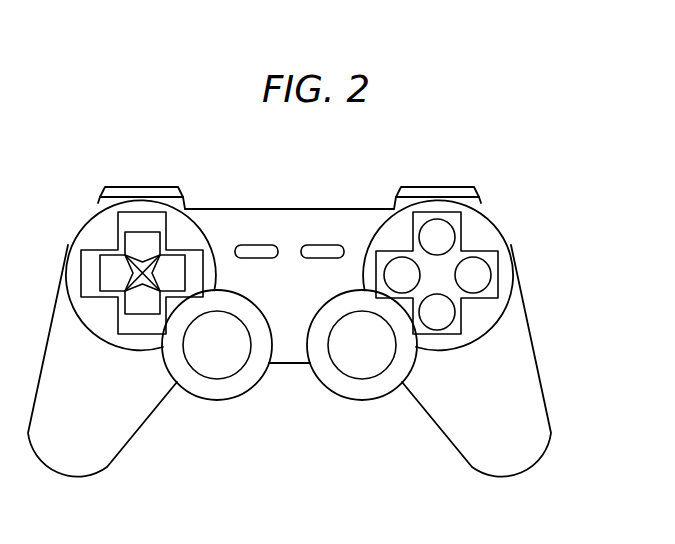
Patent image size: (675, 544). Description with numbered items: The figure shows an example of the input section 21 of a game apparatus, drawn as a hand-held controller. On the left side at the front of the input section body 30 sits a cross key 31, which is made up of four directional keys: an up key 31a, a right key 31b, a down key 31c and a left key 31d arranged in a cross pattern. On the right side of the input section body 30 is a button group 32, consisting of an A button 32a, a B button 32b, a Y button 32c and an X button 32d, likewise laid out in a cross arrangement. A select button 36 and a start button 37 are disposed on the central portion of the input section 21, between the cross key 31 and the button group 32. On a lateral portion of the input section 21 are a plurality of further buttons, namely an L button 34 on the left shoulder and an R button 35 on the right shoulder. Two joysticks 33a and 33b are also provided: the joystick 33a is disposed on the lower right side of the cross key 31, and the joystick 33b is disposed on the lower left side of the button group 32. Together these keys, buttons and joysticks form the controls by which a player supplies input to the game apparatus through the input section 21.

The input section 21 is at (553, 325).
The input section body 30 is at (271, 208).
The cross key 31 is at (90, 270).
The up key 31a is at (125, 237).
The right key 31b is at (184, 273).
The down key 31c is at (138, 316).
The left key 31d is at (100, 285).
The button group 32 is at (397, 225).
The A button 32a is at (437, 331).
The B button 32b is at (491, 274).
The Y button 32c is at (389, 262).
The X button 32d is at (455, 237).
The joystick 33a is at (214, 380).
The joystick 33b is at (360, 380).
The L button 34 is at (128, 186).
The R button 35 is at (445, 186).
The select button 36 is at (245, 246).
The start button 37 is at (308, 246).